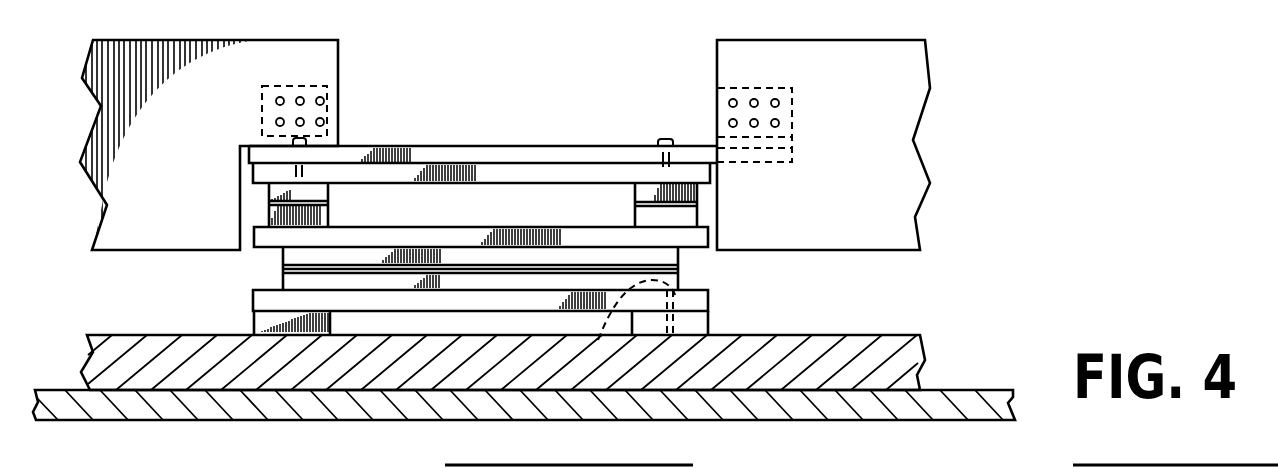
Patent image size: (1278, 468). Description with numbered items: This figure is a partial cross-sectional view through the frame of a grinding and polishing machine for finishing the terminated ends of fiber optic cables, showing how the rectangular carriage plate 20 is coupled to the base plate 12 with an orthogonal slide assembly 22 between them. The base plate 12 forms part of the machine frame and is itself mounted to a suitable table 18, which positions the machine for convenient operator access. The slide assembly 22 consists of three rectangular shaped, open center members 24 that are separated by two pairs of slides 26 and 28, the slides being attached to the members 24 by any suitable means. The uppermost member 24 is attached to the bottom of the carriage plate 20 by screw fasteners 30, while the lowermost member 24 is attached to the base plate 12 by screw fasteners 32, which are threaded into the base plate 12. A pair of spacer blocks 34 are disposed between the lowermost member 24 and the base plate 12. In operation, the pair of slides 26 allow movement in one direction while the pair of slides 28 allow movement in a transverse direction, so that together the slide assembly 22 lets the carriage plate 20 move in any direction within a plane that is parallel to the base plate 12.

The base plate 12 is at (122, 333).
The table 18 is at (54, 390).
The carriage plate 20 is at (480, 159).
The orthogonal slide assembly 22 is at (738, 263).
The member 24 is at (560, 172).
The slides 26 is at (282, 260).
The slides 28 is at (308, 193).
The screw fasteners 30 is at (664, 138).
The screw fasteners 32 is at (598, 336).
The spacer blocks 34 is at (257, 318).